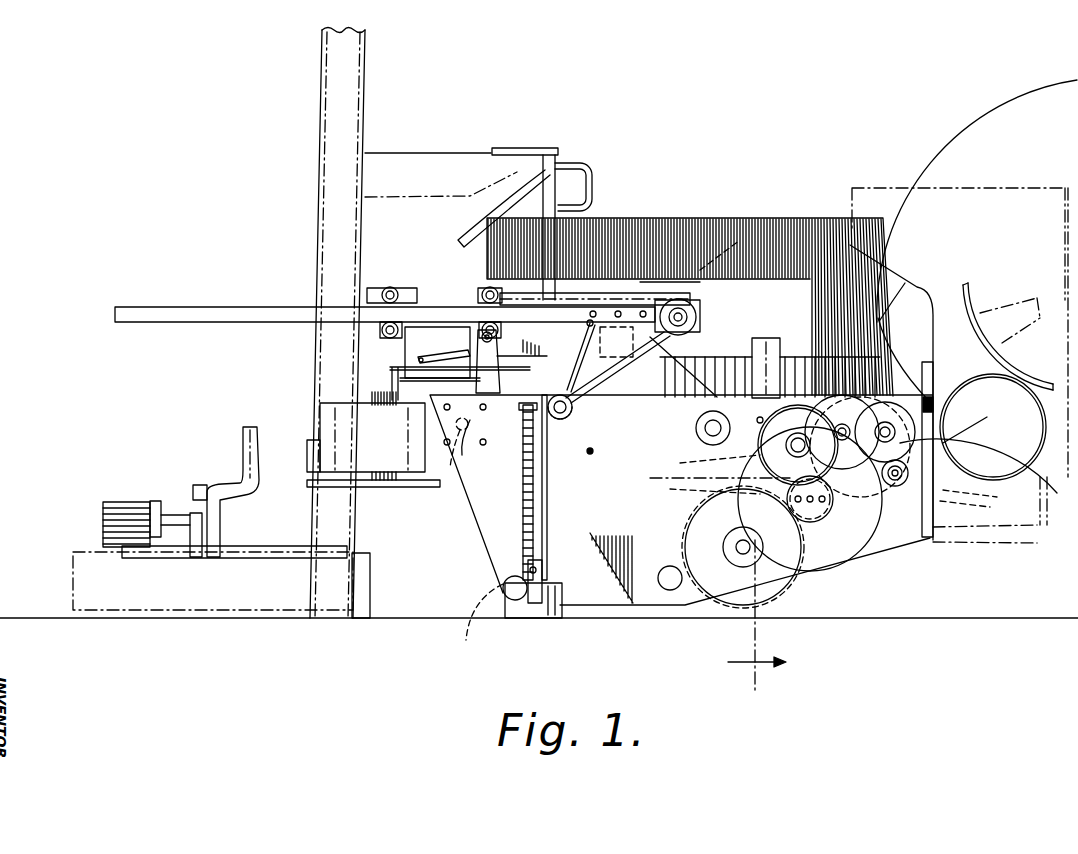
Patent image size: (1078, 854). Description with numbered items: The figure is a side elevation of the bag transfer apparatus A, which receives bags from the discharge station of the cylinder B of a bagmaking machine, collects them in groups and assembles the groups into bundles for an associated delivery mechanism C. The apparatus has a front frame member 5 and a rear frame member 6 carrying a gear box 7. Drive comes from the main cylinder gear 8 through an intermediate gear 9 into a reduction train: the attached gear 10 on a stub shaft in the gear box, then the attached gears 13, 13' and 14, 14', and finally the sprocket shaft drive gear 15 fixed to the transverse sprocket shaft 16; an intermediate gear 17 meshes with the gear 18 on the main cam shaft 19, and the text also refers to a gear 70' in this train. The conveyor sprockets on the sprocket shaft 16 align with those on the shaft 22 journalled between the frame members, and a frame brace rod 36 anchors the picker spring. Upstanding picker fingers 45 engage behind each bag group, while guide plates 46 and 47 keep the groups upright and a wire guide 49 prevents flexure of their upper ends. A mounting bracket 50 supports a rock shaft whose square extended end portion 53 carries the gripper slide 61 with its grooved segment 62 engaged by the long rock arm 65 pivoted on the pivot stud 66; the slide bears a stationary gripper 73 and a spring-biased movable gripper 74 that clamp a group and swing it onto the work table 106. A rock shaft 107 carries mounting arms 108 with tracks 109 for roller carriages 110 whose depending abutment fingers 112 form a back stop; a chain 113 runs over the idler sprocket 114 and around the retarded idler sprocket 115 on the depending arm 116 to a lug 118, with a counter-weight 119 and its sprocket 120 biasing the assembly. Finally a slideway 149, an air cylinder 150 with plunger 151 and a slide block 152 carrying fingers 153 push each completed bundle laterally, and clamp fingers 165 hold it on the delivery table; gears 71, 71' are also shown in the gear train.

The front frame member 5 is at (478, 555).
The rear frame member 6 is at (842, 605).
The gear box 7 is at (896, 360).
The main cylinder gear 8 is at (970, 283).
The intermediate gear 9 is at (1045, 487).
The attached gear 10 is at (981, 498).
The guide 70' is at (966, 513).
The attached gear 13 is at (715, 490).
The attached gear 13' is at (720, 465).
The attached gear 14 is at (831, 484).
The attached gear 14' is at (750, 411).
The sprocket shaft drive gear 15 is at (948, 418).
The sprocket shaft 16 is at (685, 479).
The intermediate gear 17 is at (893, 487).
The gear 18 is at (812, 572).
The main cam shaft 19 is at (738, 547).
The shaft 22 is at (463, 449).
The frame brace rod 36 is at (670, 592).
The picker fingers 45 is at (935, 392).
The guide plates 46 is at (790, 260).
The guide plates 47 is at (645, 283).
The wire guide 49 is at (592, 180).
The mounting bracket 50 is at (618, 390).
The extended end portion 53 is at (410, 348).
The gripper slide 61 is at (430, 340).
The segment 62 is at (488, 300).
The rock arm 65 is at (496, 368).
The pivot stud 66 is at (486, 620).
The gear 71 is at (853, 490).
The gear 71' is at (885, 506).
The stationary gripper 73 is at (398, 380).
The movable gripper 74 is at (388, 369).
The work table 106 is at (368, 490).
The rock shaft 107 is at (705, 436).
The mounting arms 108 is at (705, 362).
The track 109 is at (196, 306).
The carriage 110 is at (385, 286).
The abutment fingers 112 is at (365, 330).
The chain 113 is at (660, 298).
The idler sprocket 114 is at (730, 240).
The idler sprocket 115 is at (572, 414).
The depending arm 116 is at (515, 398).
The lug 118 is at (520, 440).
The counter-weight 119 is at (516, 618).
The sprocket 120 is at (543, 560).
The slideway 149 is at (182, 556).
The air cylinder 150 is at (112, 503).
The plunger 151 is at (153, 500).
The slide block 152 is at (206, 540).
The fingers 153 is at (244, 440).
The clamp fingers 165 is at (246, 430).
The bag transfer apparatus A is at (640, 607).
The cylinder B is at (983, 102).
The delivery mechanism C is at (237, 588).